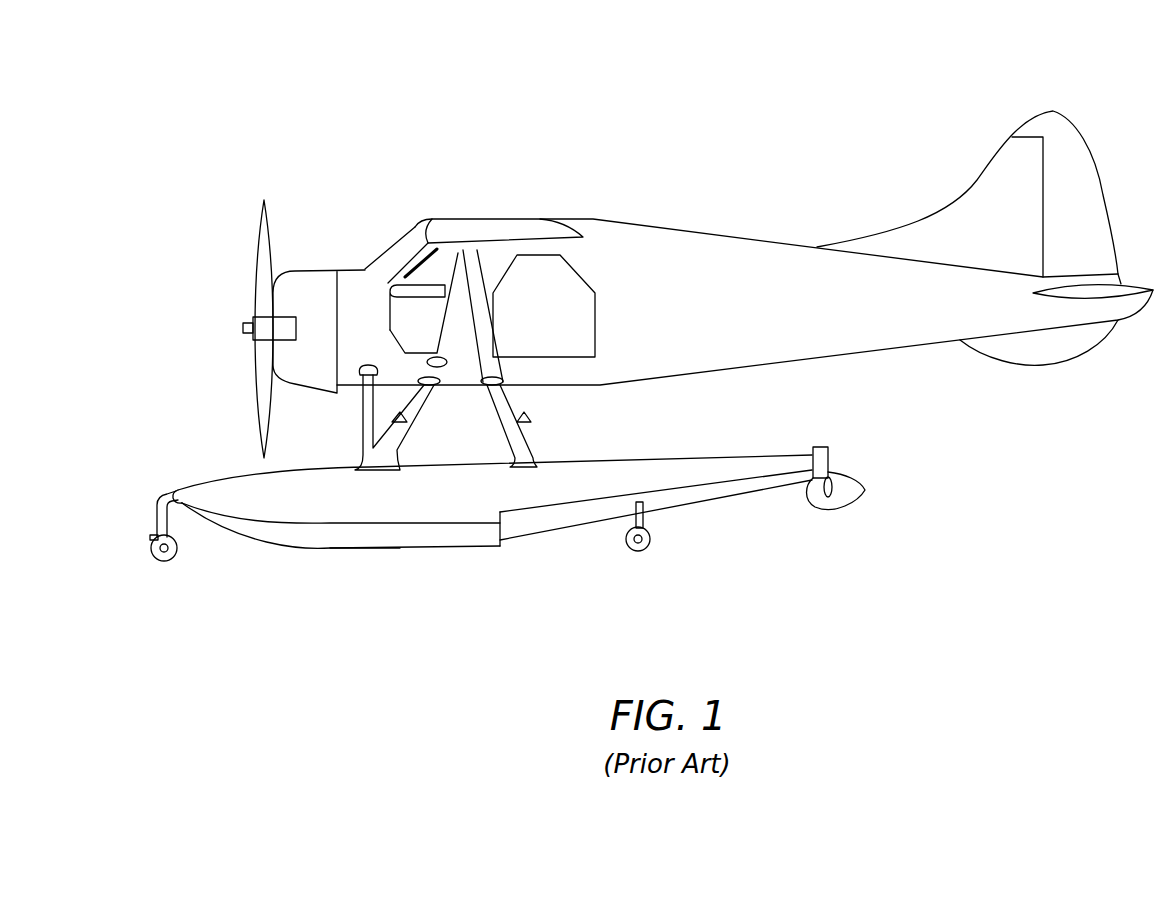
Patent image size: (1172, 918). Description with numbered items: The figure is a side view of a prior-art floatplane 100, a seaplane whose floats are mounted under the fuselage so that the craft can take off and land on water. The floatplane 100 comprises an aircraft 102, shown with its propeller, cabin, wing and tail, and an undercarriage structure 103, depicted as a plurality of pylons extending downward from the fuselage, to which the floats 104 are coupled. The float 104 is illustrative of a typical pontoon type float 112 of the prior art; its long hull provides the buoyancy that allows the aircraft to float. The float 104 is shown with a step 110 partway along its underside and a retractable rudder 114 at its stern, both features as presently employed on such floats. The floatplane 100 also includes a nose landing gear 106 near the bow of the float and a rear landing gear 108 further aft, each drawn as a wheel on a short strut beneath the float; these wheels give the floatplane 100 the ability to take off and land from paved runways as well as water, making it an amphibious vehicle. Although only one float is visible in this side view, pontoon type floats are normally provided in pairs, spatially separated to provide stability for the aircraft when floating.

The floatplane 100 is at (802, 115).
The aircraft 102 is at (593, 220).
The undercarriage structure 103 is at (527, 436).
The float 104 is at (660, 458).
The nose landing gear 106 is at (157, 527).
The rear landing gear 108 is at (647, 518).
The step 110 is at (500, 546).
The pontoon type float 112 is at (315, 602).
The retractable rudder 114 is at (868, 518).